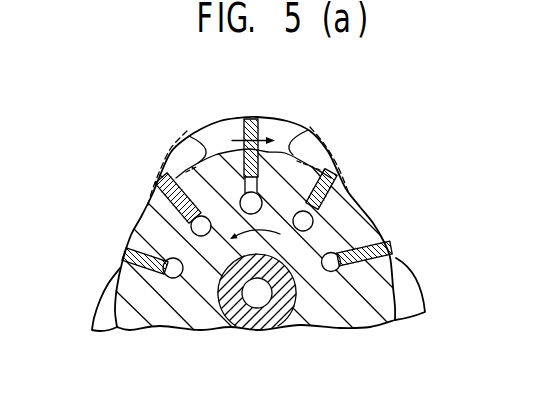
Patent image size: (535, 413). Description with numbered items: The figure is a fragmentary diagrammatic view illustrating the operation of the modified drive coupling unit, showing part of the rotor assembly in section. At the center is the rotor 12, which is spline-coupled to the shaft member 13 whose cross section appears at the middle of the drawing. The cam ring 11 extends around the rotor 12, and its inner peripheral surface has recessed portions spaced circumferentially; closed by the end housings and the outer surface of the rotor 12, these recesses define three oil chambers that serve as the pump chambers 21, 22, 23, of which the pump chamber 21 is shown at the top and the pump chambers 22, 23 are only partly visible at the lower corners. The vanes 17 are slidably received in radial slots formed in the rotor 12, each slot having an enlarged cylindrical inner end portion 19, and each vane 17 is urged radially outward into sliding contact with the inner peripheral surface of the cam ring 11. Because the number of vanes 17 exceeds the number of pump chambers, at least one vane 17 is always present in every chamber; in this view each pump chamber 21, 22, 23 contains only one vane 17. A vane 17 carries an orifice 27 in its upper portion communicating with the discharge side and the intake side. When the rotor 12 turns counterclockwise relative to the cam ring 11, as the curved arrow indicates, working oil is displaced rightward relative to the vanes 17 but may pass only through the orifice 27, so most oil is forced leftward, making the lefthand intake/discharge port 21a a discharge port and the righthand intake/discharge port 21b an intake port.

The cam ring 11 is at (124, 174).
The rotor 12 is at (130, 280).
The shaft member 13 is at (272, 309).
The vane 17 is at (245, 170).
The enlarged cylindrical inner end portion 19 is at (266, 205).
The pump chamber 21 is at (205, 140).
The intake/discharge port 21a is at (173, 167).
The intake/discharge port 21b is at (310, 145).
The pump chamber 22 is at (100, 310).
The pump chamber 23 is at (407, 287).
The orifice 27 is at (263, 128).